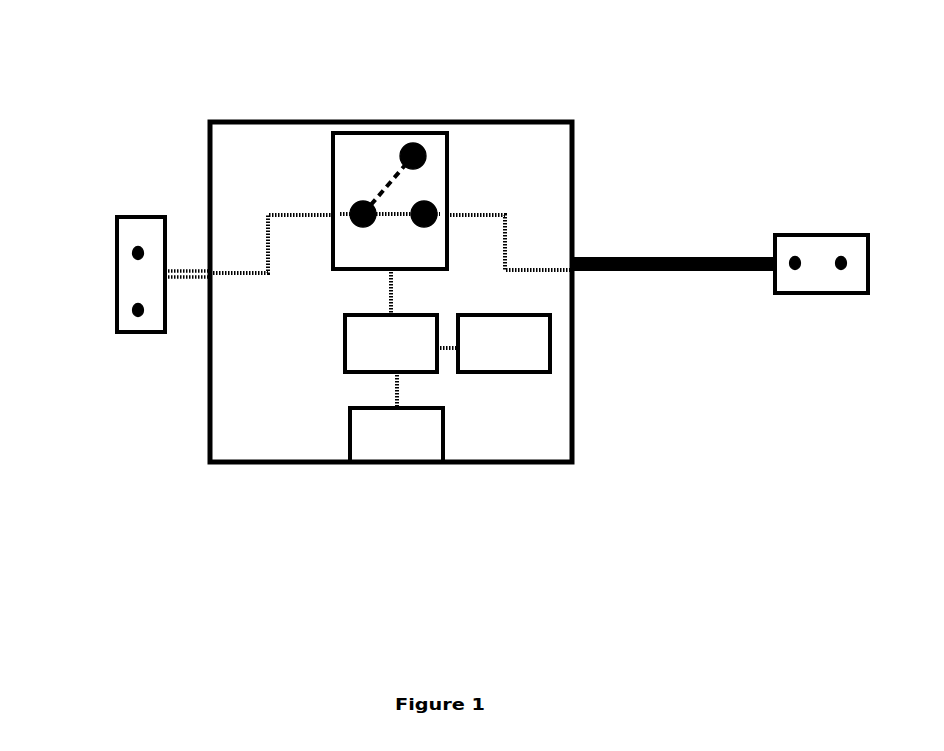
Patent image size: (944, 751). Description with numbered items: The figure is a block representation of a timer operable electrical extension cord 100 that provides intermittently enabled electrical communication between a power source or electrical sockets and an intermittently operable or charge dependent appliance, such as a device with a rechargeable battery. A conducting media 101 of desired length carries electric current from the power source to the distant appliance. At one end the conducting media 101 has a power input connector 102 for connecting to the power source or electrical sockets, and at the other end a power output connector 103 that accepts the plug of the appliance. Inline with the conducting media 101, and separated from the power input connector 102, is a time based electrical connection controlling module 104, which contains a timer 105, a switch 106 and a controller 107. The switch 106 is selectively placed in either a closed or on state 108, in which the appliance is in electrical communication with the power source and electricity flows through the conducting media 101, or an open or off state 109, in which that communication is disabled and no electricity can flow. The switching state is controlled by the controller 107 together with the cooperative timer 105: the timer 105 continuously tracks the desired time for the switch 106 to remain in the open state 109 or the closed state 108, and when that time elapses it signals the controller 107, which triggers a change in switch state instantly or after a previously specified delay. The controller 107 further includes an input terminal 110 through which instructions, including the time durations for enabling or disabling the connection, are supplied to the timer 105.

The electrical extension cord 100 is at (616, 80).
The conducting media 101 is at (620, 280).
The power input connector 102 is at (826, 233).
The power output connector 103 is at (142, 205).
The electrical connection controlling module 104 is at (323, 470).
The timer 105 is at (510, 365).
The switch 106 is at (441, 160).
The controller 107 is at (343, 335).
The closed or on state 108 is at (430, 192).
The open or off state 109 is at (397, 145).
The input terminal 110 is at (410, 443).